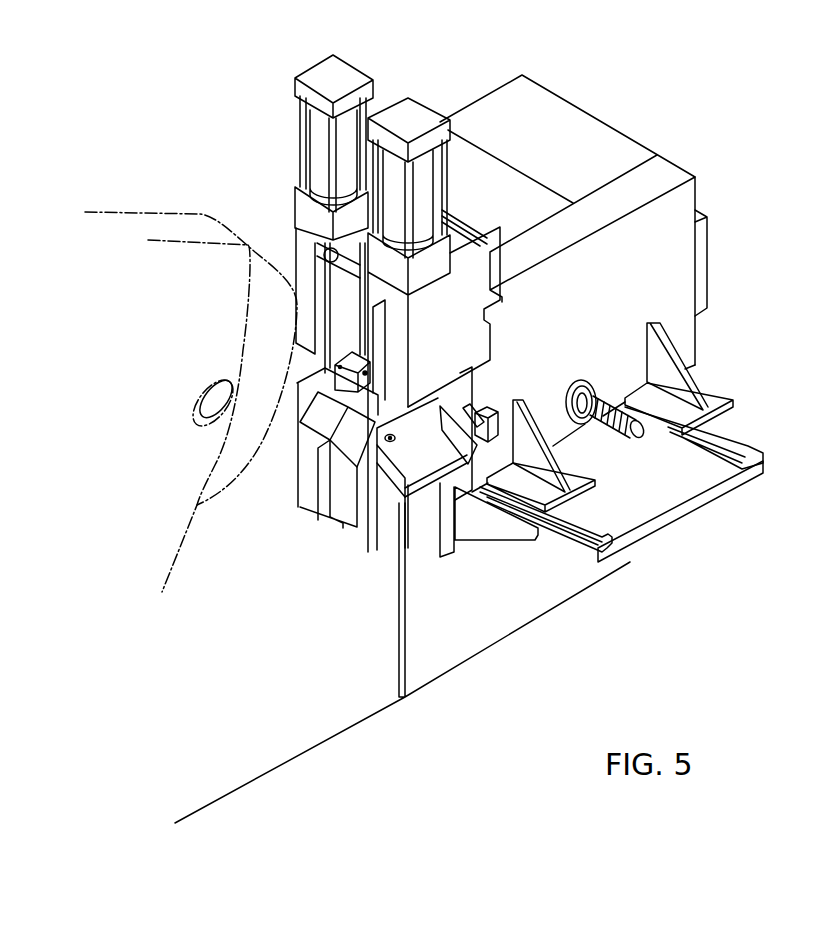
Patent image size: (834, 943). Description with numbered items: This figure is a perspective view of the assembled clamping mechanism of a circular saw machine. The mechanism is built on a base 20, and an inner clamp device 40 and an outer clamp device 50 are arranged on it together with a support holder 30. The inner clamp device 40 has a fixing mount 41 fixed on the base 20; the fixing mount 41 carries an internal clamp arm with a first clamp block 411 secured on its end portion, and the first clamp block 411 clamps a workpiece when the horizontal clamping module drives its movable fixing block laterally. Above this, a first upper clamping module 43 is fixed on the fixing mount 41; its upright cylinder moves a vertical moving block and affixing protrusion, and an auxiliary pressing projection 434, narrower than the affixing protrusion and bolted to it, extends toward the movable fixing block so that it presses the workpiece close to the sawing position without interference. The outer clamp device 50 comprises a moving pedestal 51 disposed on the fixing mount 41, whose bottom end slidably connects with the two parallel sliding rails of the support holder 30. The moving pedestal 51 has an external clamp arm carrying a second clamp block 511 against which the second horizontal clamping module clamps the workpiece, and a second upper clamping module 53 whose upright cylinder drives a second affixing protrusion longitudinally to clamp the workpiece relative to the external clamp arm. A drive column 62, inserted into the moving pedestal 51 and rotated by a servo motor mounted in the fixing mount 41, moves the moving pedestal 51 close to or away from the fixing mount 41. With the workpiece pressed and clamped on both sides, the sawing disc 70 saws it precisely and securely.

The base 20 is at (433, 667).
The support holder 30 is at (680, 530).
The inner clamp device 40 is at (616, 102).
The fixing mount 41 is at (544, 104).
The first clamp block 411 is at (308, 448).
The first upper clamping module 43 is at (298, 247).
The auxiliary pressing projection 434 is at (349, 353).
The outer clamp device 50 is at (742, 192).
The moving pedestal 51 is at (680, 268).
The second clamp block 511 is at (345, 482).
The second upper clamping module 53 is at (472, 332).
The drive column 62 is at (615, 397).
The sawing disc 70 is at (268, 358).